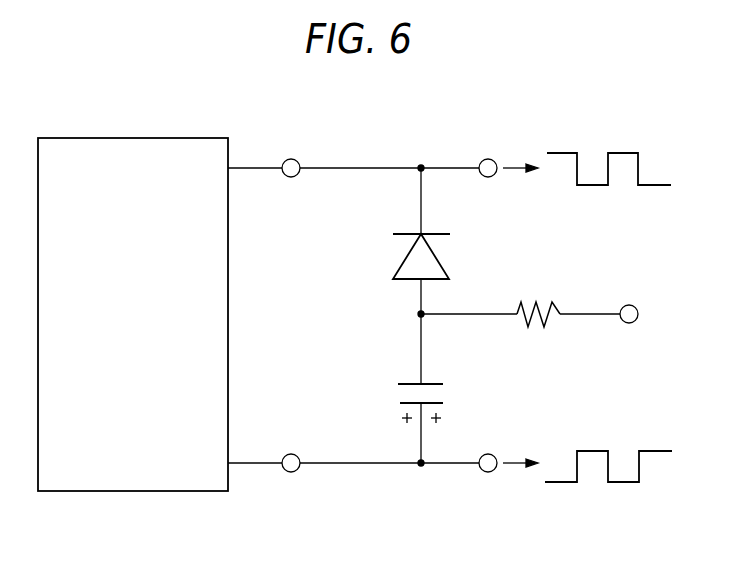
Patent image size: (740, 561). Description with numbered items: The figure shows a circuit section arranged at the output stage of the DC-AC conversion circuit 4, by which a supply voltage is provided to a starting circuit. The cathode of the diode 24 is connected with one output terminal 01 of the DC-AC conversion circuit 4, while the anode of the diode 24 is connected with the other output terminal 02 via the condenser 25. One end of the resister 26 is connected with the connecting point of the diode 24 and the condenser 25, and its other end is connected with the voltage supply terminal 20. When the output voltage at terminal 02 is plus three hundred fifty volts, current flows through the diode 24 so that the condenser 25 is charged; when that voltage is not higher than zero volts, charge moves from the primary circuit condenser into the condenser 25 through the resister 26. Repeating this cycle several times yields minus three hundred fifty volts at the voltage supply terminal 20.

The DC-AC conversion circuit 4 is at (134, 138).
The output terminal 01 is at (286, 160).
The output terminal 02 is at (287, 455).
The diode 24 is at (401, 268).
The condenser 25 is at (408, 382).
The resister 26 is at (537, 304).
The voltage supply terminal 20 is at (634, 305).